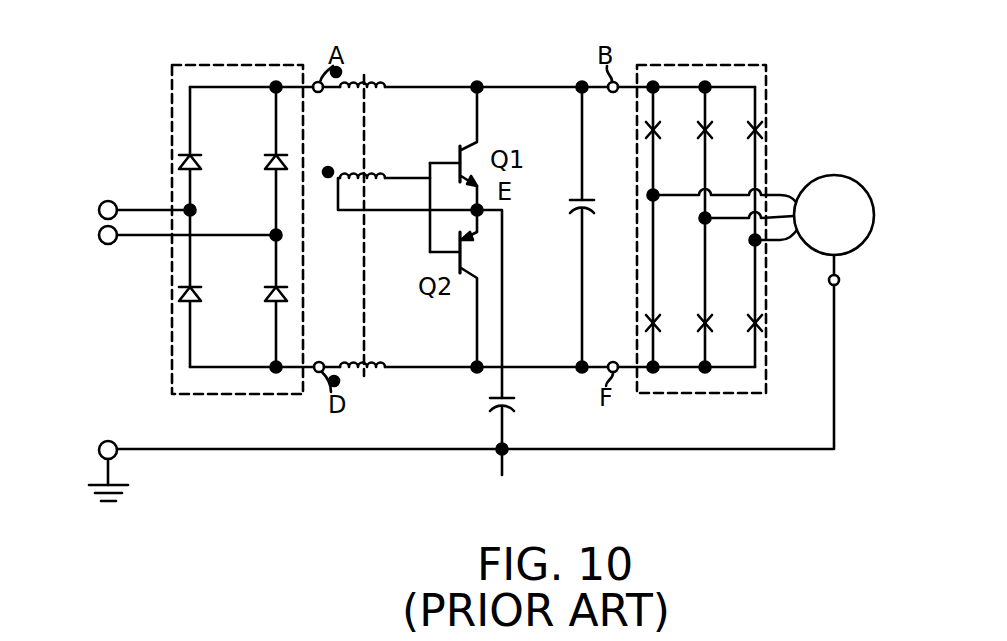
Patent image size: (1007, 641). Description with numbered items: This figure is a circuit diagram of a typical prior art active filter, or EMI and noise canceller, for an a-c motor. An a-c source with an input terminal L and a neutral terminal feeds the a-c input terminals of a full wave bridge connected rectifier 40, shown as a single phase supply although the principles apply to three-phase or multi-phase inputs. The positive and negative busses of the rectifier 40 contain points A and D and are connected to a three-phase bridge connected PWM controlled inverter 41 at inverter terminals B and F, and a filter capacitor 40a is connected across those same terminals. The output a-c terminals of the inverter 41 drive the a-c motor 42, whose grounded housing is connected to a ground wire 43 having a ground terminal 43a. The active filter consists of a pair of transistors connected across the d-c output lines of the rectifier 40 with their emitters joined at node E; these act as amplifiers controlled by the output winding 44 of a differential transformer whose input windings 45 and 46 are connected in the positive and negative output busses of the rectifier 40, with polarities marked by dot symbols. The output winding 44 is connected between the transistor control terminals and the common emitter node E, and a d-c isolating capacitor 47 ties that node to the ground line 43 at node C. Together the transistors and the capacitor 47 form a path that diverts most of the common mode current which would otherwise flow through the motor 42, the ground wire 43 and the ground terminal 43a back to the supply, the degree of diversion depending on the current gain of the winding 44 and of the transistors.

The full wave bridge connected rectifier 40 is at (238, 64).
The filter capacitor 40a is at (593, 198).
The three-phase bridge connected PWM controlled inverter 41 is at (702, 64).
The a-c motor 42 is at (834, 175).
The ground wire 43 is at (705, 452).
The ground terminal 43a is at (100, 455).
The output winding 44 is at (366, 178).
The input winding 45 is at (366, 87).
The input winding 46 is at (380, 372).
The d-c isolating capacitor 47 is at (507, 397).